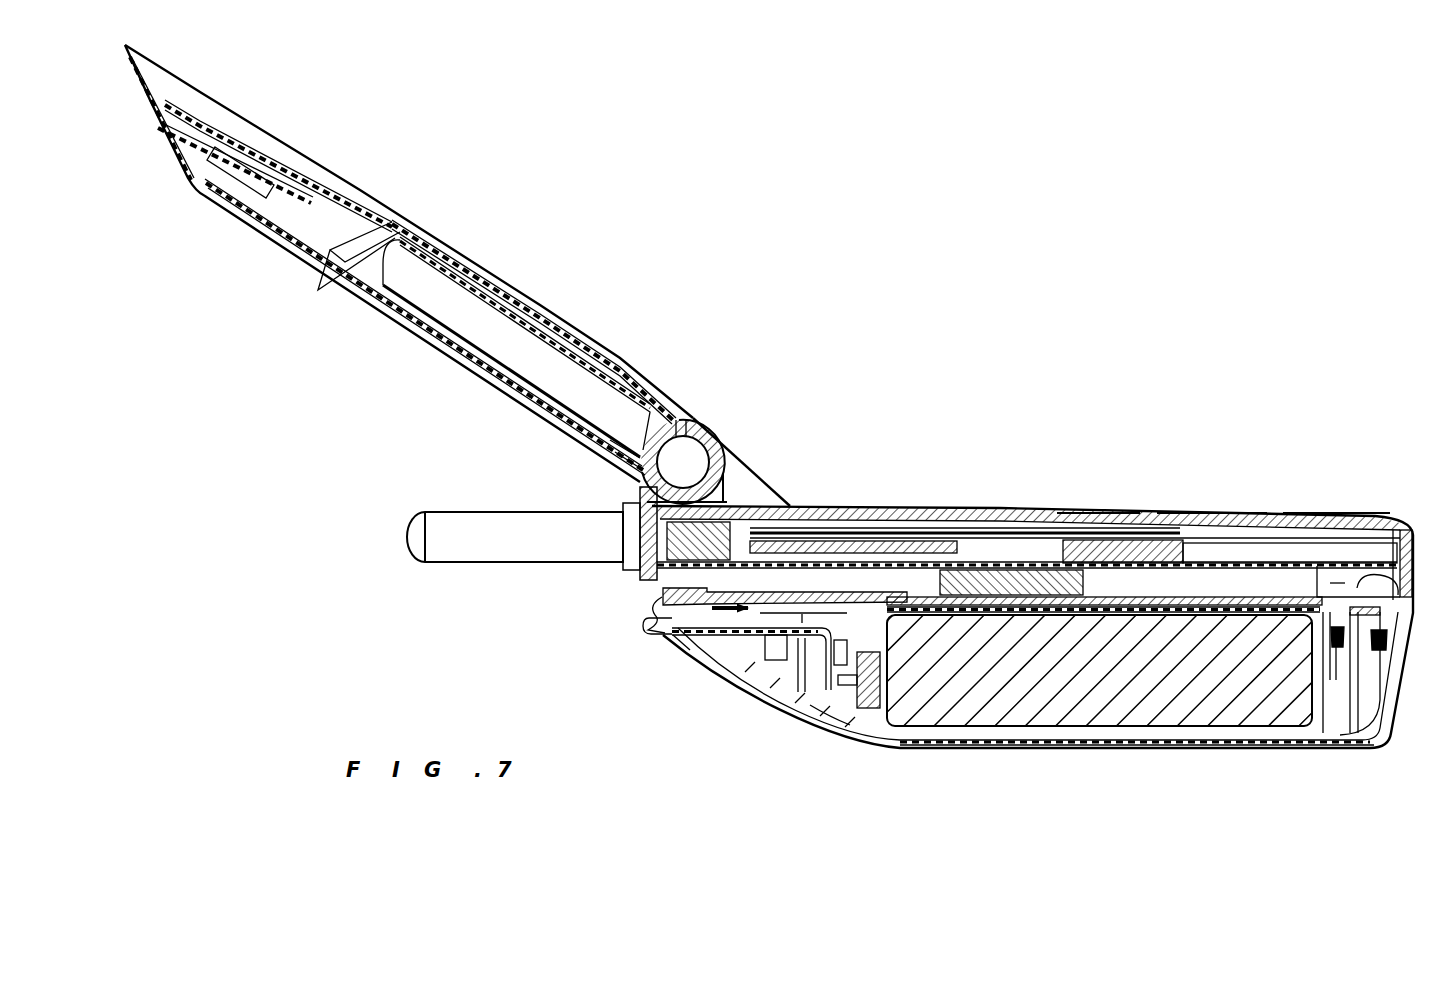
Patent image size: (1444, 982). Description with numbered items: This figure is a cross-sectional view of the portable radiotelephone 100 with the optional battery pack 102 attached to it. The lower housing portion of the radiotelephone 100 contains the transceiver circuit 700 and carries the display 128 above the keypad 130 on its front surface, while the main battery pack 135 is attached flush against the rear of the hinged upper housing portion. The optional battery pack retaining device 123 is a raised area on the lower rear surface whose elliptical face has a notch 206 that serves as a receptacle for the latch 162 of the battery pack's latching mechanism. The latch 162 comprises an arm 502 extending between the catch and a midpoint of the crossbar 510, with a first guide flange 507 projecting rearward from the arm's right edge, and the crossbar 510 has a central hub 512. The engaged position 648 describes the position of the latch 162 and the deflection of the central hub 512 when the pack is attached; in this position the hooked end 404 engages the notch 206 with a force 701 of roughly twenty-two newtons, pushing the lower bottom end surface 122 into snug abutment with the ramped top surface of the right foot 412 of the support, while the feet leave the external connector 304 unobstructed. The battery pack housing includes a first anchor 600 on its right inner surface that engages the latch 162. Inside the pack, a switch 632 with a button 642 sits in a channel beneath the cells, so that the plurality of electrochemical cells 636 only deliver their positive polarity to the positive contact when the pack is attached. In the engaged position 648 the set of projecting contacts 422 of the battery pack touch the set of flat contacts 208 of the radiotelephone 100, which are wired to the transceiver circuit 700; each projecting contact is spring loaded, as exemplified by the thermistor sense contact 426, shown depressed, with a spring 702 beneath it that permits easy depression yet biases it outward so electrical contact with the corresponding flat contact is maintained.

The portable radiotelephone 100 is at (1103, 445).
The optional battery pack 102 is at (897, 793).
The lower bottom end surface 122 is at (1385, 637).
The optional battery pack retaining device 123 is at (550, 620).
The display 128 is at (852, 506).
The keypad 130 is at (1153, 512).
The main battery pack 135 is at (560, 358).
The latch 162 is at (630, 633).
The notch 206 is at (663, 590).
The set of flat contacts 208 is at (1333, 583).
The external connector 304 is at (1340, 550).
The hooked end 404 is at (655, 600).
The right foot 412 is at (1402, 533).
The set of projecting contacts 422 is at (1380, 640).
The thermistor sense contact 426 is at (1337, 620).
The arm 502 is at (745, 660).
The first guide flange 507 is at (785, 662).
The crossbar 510 is at (828, 703).
The central hub 512 is at (807, 660).
The first anchor 600 is at (832, 685).
The switch 632 is at (873, 707).
The plurality of electrochemical cells 636 is at (1120, 720).
The button 642 is at (845, 685).
The engaged position 648 is at (845, 628).
The transceiver circuit 700 is at (984, 540).
The force 701 is at (718, 632).
The spring 702 is at (1347, 613).